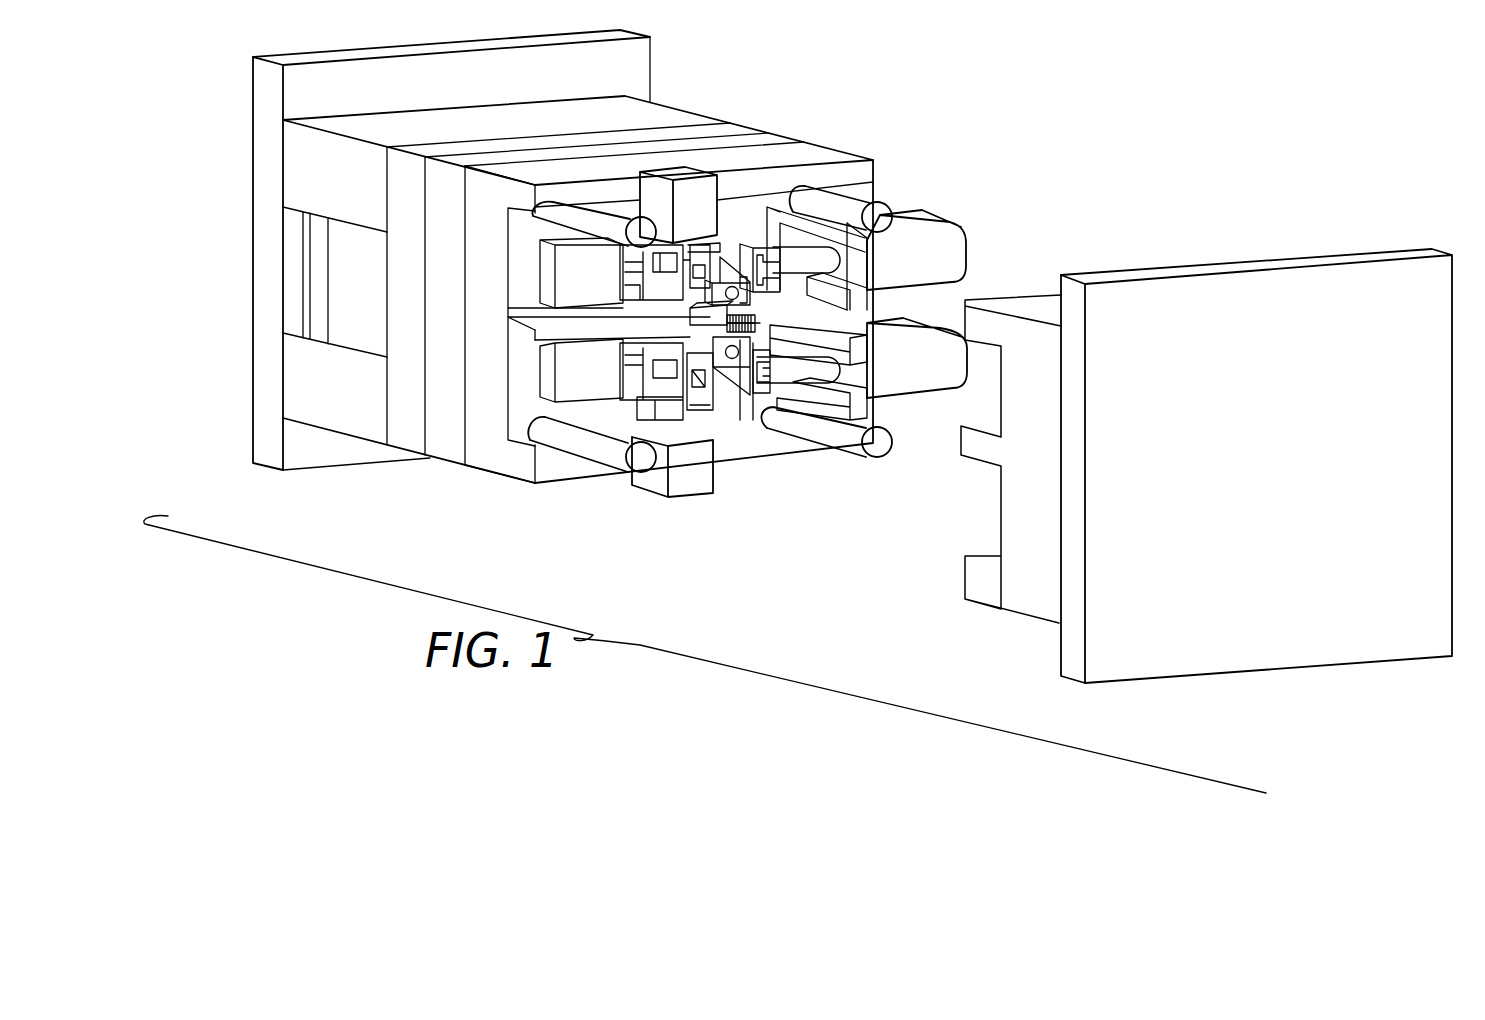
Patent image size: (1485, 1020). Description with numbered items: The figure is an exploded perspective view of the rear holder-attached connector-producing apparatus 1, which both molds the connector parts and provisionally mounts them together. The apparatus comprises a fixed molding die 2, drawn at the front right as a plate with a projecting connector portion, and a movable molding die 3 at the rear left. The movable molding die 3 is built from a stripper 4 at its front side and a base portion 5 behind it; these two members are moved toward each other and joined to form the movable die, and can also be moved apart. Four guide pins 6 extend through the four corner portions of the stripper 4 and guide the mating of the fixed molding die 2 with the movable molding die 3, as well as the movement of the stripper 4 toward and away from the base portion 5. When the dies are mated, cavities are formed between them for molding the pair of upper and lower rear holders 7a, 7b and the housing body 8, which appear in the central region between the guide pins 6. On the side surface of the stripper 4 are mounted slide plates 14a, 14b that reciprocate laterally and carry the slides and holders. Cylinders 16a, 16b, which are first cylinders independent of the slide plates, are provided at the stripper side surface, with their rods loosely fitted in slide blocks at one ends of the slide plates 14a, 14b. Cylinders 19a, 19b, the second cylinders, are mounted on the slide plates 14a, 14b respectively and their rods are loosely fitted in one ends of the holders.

The rear holder-attached connector-producing apparatus 1 is at (952, 160).
The fixed molding die 2 is at (1212, 652).
The movable molding die 3 is at (715, 96).
The stripper 4 is at (503, 455).
The base portion 5 is at (443, 433).
The guide pins 6 is at (573, 212).
The rear holder 7a is at (622, 298).
The rear holder 7b is at (622, 365).
The housing body 8 is at (760, 322).
The slide plate 14a is at (545, 279).
The slide plate 14b is at (545, 378).
The cylinder 16a is at (948, 245).
The cylinder 16b is at (948, 375).
The cylinder 19a is at (703, 200).
The cylinder 19b is at (697, 470).